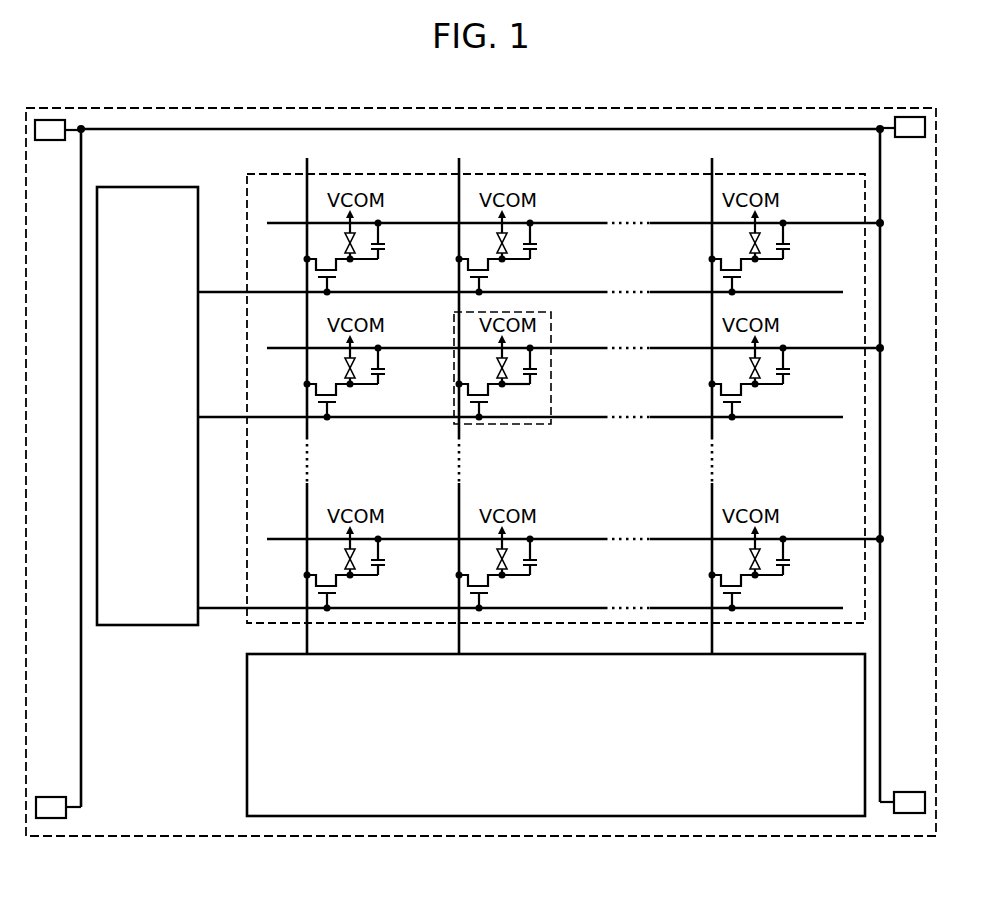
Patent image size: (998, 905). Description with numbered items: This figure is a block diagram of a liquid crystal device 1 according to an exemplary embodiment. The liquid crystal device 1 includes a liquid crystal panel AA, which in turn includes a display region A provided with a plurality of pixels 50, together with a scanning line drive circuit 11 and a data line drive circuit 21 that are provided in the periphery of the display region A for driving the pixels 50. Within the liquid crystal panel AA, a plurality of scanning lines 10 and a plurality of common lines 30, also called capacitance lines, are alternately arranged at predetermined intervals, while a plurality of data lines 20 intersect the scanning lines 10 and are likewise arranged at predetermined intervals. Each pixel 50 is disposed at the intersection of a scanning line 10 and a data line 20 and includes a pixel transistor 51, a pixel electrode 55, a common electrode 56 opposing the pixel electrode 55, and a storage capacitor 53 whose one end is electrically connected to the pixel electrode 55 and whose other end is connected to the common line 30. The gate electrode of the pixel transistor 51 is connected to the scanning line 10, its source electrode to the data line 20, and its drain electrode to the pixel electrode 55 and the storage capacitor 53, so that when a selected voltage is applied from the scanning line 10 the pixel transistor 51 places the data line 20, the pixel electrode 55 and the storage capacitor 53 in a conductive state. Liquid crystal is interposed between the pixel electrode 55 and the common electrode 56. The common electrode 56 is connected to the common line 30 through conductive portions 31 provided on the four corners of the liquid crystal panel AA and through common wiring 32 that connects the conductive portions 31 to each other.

The liquid crystal device 1 is at (565, 85).
The scanning line 10 is at (222, 292).
The scanning line drive circuit 11 is at (139, 626).
The data line 20 is at (308, 641).
The data line drive circuit 21 is at (538, 816).
The common line 30 is at (283, 223).
The conductive portion 31 is at (45, 141).
The common wiring 32 is at (756, 128).
The pixel 50 is at (511, 386).
The pixel transistor 51 is at (491, 402).
The storage capacitor 53 is at (545, 368).
The pixel electrode 55 is at (489, 375).
The common electrode 56 is at (491, 364).
The display region A is at (865, 302).
The liquid crystal panel AA is at (302, 96).